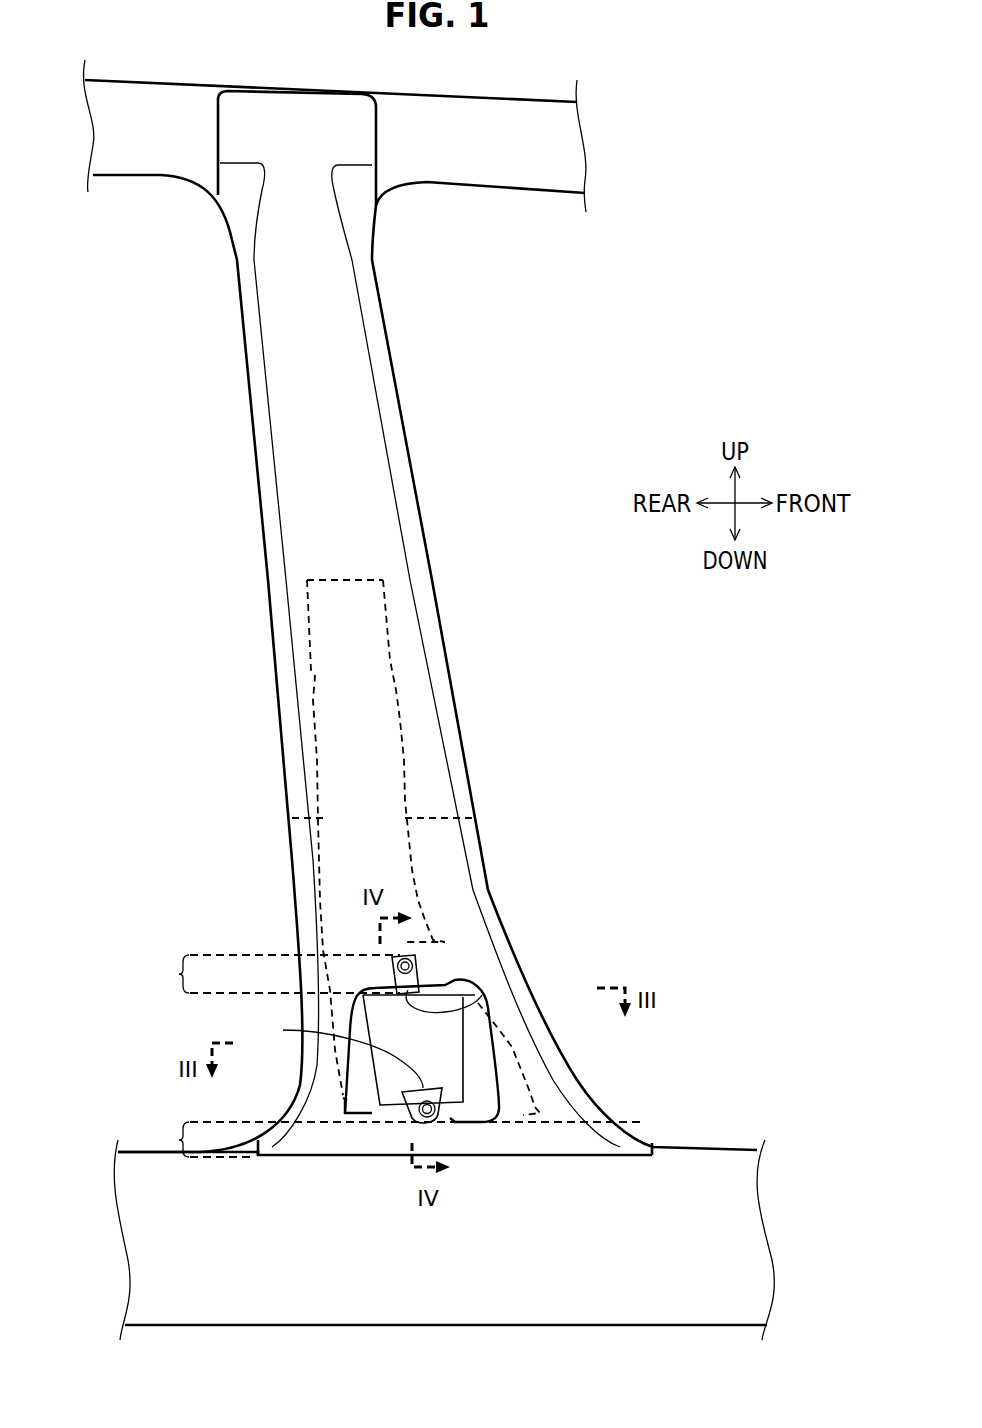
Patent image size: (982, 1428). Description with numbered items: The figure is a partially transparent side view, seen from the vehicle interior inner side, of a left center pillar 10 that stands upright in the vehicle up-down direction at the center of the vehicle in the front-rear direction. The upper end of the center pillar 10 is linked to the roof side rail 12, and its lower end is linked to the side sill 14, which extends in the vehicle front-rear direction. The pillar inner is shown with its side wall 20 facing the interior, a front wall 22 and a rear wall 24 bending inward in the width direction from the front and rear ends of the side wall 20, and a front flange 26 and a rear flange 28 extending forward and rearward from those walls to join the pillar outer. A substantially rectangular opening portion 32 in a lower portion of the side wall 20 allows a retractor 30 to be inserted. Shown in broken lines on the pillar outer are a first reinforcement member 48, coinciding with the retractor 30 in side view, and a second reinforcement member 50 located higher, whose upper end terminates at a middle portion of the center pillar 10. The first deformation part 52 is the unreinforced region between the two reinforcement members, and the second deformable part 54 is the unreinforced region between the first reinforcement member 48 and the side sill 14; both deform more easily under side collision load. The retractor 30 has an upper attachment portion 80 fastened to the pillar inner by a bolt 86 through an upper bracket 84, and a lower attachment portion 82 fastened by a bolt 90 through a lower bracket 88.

The center pillar 10 is at (437, 680).
The roof side rail 12 is at (575, 146).
The side sill 14 is at (430, 1298).
The side wall 20 is at (360, 478).
The front wall 22 is at (428, 612).
The rear wall 24 is at (280, 613).
The front flange 26 is at (468, 777).
The rear flange 28 is at (285, 775).
The retractor 30 is at (448, 1002).
The opening portion 32 is at (347, 1097).
The first reinforcement member 48 is at (532, 1083).
The second reinforcement member 50 is at (403, 715).
The first deformation part 52 is at (272, 974).
The second deformable part 54 is at (392, 1139).
The upper attachment portion 80 is at (480, 929).
The lower attachment portion 82 is at (455, 1093).
The upper bracket 84 is at (482, 995).
The bolt 86 is at (405, 955).
The lower bracket 88 is at (335, 1051).
The bolt 90 is at (430, 1122).